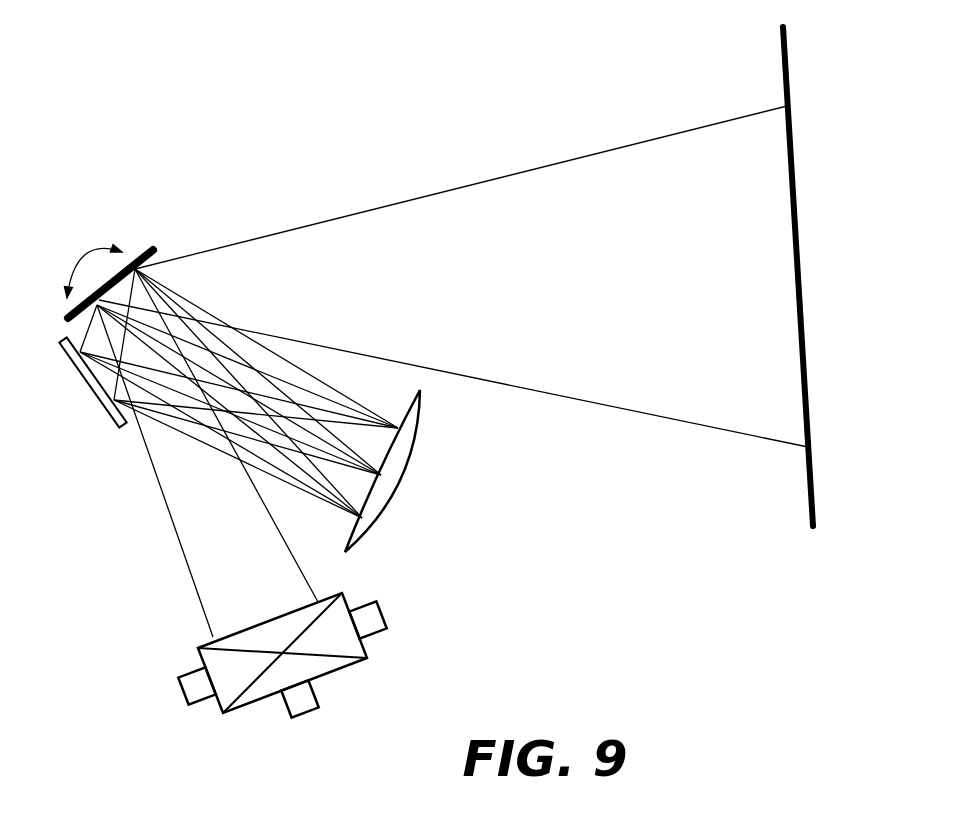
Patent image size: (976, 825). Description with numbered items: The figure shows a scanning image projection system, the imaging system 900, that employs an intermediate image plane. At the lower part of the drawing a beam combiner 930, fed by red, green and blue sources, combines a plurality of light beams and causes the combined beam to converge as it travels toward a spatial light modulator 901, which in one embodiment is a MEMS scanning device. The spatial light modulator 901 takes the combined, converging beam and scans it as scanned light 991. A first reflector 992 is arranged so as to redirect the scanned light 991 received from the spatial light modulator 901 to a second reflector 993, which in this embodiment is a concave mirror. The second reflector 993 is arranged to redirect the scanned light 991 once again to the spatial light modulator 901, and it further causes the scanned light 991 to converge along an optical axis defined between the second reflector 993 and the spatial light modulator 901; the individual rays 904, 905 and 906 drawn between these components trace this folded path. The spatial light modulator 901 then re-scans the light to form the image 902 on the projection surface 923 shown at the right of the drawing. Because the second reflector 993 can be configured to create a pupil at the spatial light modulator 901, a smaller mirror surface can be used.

The imaging system 900 is at (257, 188).
The spatial light modulator 901 is at (146, 252).
The images 902 is at (770, 197).
The light ray 904 is at (338, 467).
The light ray 905 is at (200, 440).
The light ray 906 is at (326, 396).
The projection surface 923 is at (794, 145).
The beam combiner 930 is at (267, 690).
The scanned light 991 is at (90, 334).
The first reflector 992 is at (85, 377).
The second reflector 993 is at (403, 460).